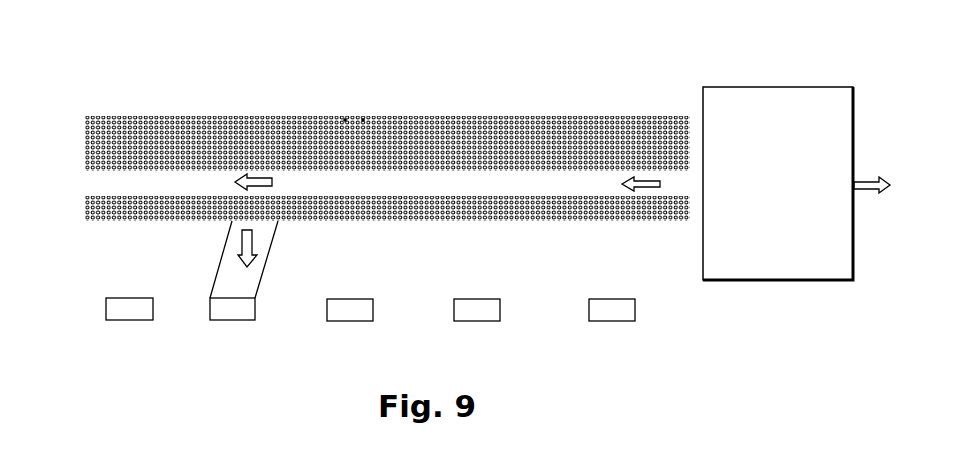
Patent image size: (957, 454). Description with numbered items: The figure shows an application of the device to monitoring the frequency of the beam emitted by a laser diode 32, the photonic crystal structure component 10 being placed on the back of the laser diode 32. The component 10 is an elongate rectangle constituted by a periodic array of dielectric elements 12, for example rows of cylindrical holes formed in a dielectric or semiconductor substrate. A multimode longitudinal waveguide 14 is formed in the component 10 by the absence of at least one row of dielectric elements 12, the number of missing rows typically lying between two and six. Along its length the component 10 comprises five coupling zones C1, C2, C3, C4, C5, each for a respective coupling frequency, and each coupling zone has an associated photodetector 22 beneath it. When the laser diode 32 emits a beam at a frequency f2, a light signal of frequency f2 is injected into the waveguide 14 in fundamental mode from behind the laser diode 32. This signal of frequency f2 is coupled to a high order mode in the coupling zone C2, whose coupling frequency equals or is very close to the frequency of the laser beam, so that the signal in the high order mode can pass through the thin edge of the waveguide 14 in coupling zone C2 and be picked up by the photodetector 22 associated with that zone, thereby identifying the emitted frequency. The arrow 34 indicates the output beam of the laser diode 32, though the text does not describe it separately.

The photonic crystal structure component 10 is at (511, 105).
The dielectric elements 12 is at (363, 120).
The multimode longitudinal waveguide 14 is at (100, 180).
The photodetector 22 is at (143, 312).
The laser diode 32 is at (778, 183).
The output 34 is at (867, 177).
The coupling zone C1 is at (107, 222).
The coupling zone C2 is at (203, 222).
The coupling zone C3 is at (352, 222).
The coupling zone C4 is at (474, 222).
The coupling zone C5 is at (622, 224).
The frequency f2 is at (460, 235).